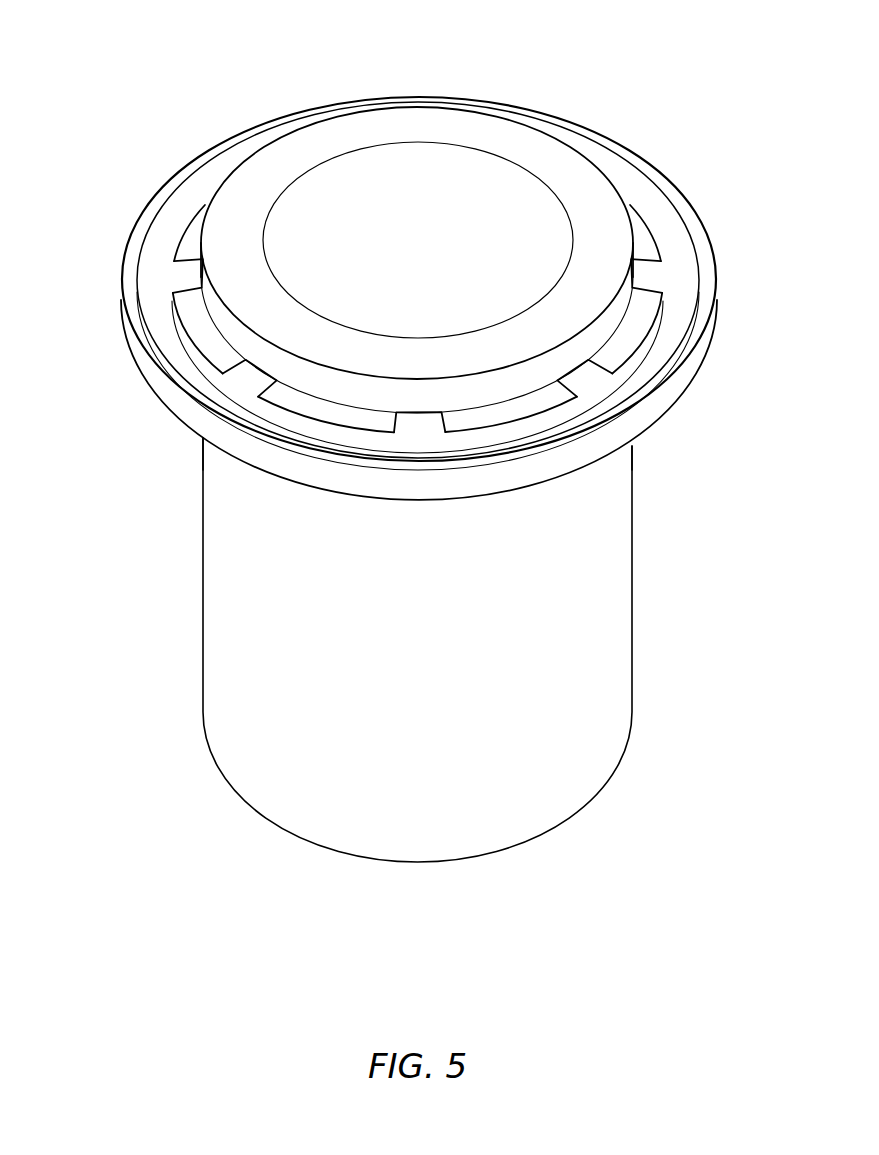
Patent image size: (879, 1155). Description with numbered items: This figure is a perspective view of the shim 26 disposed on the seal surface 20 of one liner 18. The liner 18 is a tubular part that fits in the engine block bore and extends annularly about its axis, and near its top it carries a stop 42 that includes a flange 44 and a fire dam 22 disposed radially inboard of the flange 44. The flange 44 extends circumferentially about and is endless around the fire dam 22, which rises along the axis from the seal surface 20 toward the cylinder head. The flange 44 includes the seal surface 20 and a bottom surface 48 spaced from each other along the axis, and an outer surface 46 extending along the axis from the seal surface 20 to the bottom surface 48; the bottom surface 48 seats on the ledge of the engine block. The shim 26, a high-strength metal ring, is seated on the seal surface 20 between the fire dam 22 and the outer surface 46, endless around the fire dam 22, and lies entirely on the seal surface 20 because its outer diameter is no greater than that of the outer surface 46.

The liner 18 is at (551, 867).
The seal surface 20 is at (637, 402).
The fire dam 22 is at (300, 157).
The shim 26 is at (186, 382).
The stop 42 is at (652, 103).
The flange 44 is at (716, 314).
The outer surface 46 is at (427, 497).
The bottom surface 48 is at (250, 463).